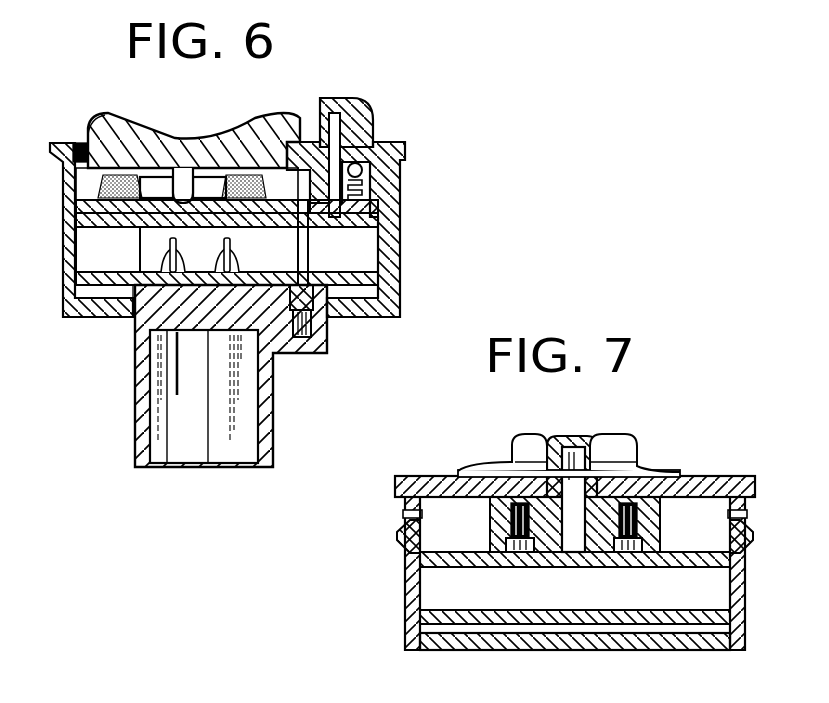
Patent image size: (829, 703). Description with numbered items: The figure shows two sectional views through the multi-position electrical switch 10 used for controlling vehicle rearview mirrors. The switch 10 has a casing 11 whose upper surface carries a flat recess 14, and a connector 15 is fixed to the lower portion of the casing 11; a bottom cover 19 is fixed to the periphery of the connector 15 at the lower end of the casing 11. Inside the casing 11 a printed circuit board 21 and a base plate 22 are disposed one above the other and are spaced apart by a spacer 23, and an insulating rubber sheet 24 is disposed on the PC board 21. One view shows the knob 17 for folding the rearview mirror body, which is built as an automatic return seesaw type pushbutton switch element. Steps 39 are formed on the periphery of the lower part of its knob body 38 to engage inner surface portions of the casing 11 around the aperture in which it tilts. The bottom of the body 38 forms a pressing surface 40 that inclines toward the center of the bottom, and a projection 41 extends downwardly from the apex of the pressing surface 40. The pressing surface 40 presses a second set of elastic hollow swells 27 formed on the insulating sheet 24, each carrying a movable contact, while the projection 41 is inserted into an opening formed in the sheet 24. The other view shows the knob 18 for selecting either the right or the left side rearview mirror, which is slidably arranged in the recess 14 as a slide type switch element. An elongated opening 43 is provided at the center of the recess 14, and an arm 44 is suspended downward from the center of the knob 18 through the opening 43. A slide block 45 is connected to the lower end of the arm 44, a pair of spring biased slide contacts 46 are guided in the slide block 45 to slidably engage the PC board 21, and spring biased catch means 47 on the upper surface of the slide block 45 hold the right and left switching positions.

In FIG. 6, the switch 10 is at (406, 154).
In FIG. 7, the switch 10 is at (738, 471).
In FIG. 6, the casing 11 is at (394, 300).
In FIG. 7, the casing 11 is at (707, 481).
In FIG. 7, the recess 14 is at (662, 471).
In FIG. 6, the connector 15 is at (262, 410).
In FIG. 6, the knob 17 is at (258, 116).
In FIG. 6, the knob 18 is at (369, 120).
In FIG. 7, the knob 18 is at (588, 435).
In FIG. 6, the bottom cover 19 is at (95, 312).
In FIG. 7, the bottom cover 19 is at (430, 641).
In FIG. 6, the printed circuit board 21 is at (365, 228).
In FIG. 7, the printed circuit board 21 is at (470, 558).
In FIG. 7, the base plate 22 is at (500, 612).
In FIG. 6, the spacer 23 is at (98, 257).
In FIG. 6, the insulating rubber sheet 24 is at (74, 208).
In FIG. 6, the elastic hollow swells 27 is at (100, 186).
In FIG. 6, the knob body 38 is at (118, 124).
In FIG. 6, the steps 39 is at (80, 148).
In FIG. 6, the pressing surface 40 is at (92, 176).
In FIG. 6, the projection 41 is at (177, 185).
In FIG. 7, the elongated opening 43 is at (535, 462).
In FIG. 6, the arm 44 is at (330, 132).
In FIG. 7, the arm 44 is at (572, 556).
In FIG. 6, the slide block 45 is at (368, 208).
In FIG. 7, the slide block 45 is at (648, 529).
In FIG. 7, the spring biased slide contacts 46 is at (508, 549).
In FIG. 6, the spring biased catch means 47 is at (372, 172).